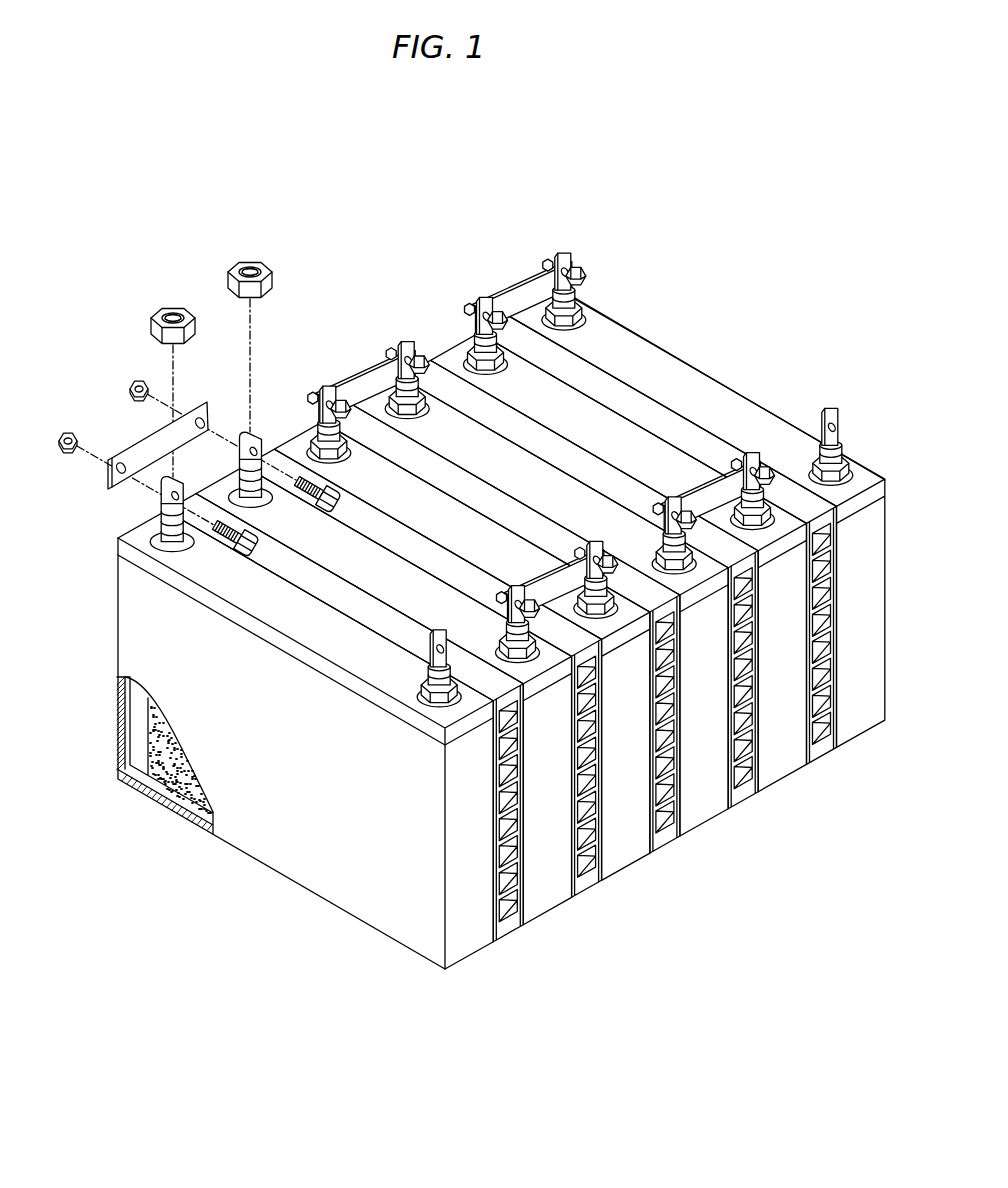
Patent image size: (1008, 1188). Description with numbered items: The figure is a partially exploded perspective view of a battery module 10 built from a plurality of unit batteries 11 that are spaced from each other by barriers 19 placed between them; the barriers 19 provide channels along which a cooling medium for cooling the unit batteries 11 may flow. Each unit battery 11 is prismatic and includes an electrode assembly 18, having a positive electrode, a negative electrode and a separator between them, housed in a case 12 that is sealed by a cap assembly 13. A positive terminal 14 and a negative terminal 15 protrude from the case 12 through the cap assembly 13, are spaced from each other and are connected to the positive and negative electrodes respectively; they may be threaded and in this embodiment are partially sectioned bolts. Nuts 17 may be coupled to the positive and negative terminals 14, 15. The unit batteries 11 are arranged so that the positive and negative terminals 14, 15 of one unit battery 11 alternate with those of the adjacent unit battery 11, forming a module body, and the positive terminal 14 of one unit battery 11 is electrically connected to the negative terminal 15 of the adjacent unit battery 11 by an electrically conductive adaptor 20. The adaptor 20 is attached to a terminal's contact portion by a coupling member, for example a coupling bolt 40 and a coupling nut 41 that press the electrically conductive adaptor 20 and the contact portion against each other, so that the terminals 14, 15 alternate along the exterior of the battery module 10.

The battery module 10 is at (781, 318).
The unit battery 11 is at (477, 963).
The case 12 is at (275, 836).
The cap assembly 13 is at (222, 575).
The positive terminal 14 is at (170, 530).
The negative terminal 15 is at (262, 482).
The nut 17 is at (150, 326).
The electrode assembly 18 is at (146, 794).
The barrier 19 is at (515, 943).
The electrically conductive adaptor 20 is at (146, 455).
The coupling bolt 40 is at (224, 535).
The coupling nut 41 is at (68, 431).